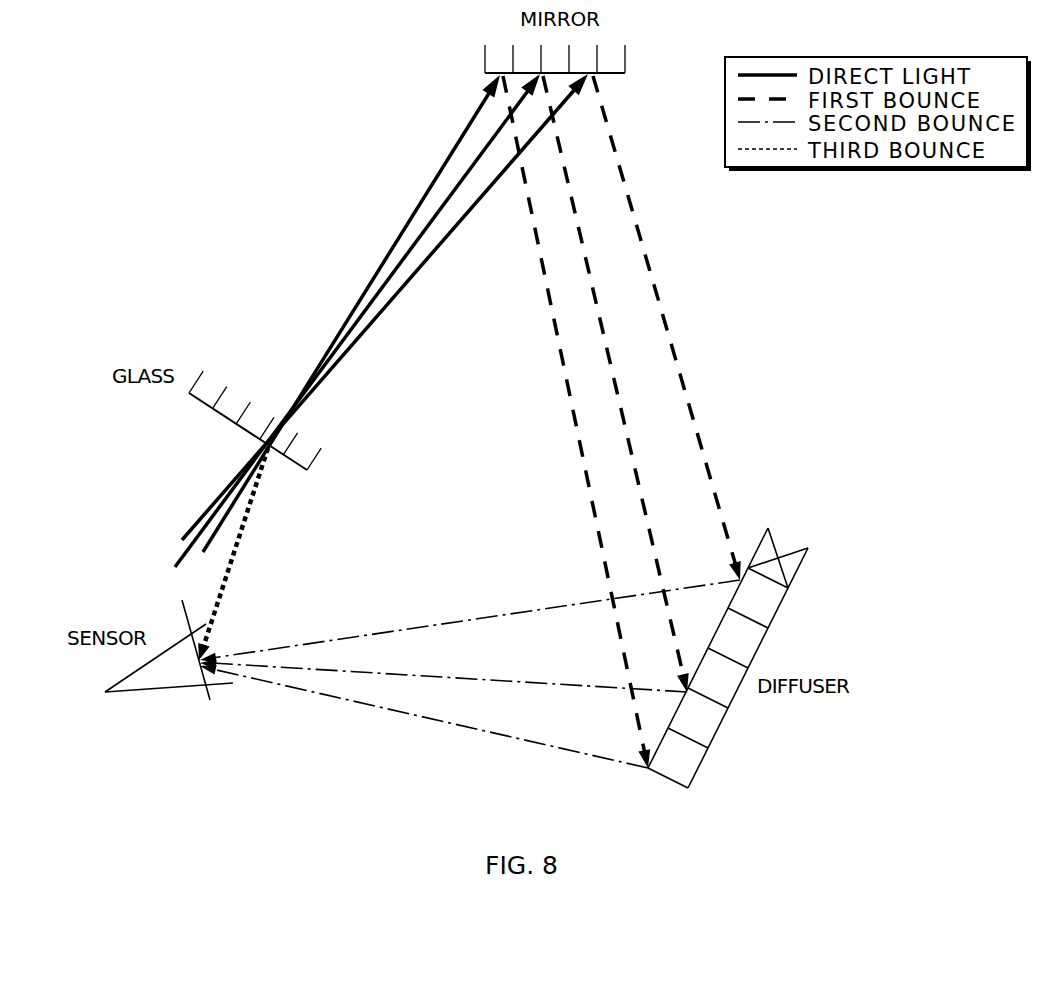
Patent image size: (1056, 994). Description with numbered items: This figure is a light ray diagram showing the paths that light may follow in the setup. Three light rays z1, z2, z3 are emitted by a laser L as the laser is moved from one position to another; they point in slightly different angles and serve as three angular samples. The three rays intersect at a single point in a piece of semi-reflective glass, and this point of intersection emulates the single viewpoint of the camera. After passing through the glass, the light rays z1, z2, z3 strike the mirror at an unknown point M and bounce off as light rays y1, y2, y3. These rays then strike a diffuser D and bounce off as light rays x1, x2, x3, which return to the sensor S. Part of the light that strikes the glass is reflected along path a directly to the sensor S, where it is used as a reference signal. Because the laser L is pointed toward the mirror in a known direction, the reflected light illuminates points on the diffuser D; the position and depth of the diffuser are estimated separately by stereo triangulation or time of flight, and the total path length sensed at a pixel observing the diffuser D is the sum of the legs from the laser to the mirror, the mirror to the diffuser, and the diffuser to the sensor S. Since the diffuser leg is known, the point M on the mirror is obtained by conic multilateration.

The mirror point M is at (555, 90).
The laser L is at (255, 420).
The sensor S is at (177, 650).
The diffuser D is at (728, 658).
The light ray z1 is at (385, 307).
The light ray z2 is at (357, 320).
The light ray z3 is at (351, 313).
The light ray y1 is at (667, 328).
The light ray y2 is at (616, 384).
The light ray y3 is at (576, 422).
The light ray x1 is at (470, 621).
The light ray x2 is at (443, 674).
The light ray x3 is at (424, 716).
The path a is at (235, 554).